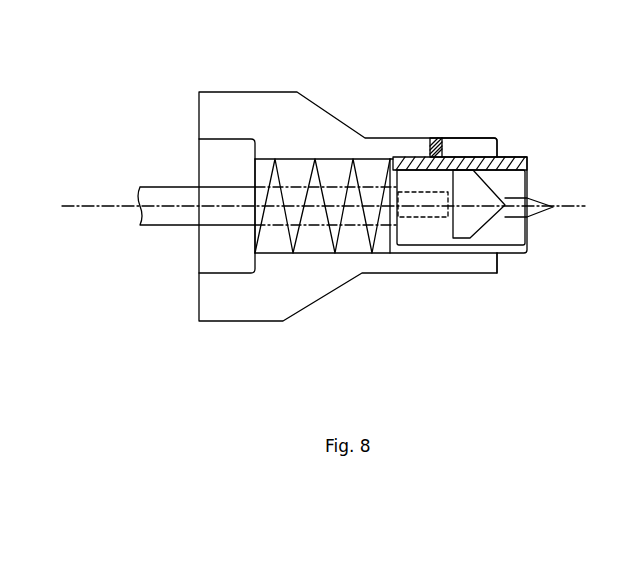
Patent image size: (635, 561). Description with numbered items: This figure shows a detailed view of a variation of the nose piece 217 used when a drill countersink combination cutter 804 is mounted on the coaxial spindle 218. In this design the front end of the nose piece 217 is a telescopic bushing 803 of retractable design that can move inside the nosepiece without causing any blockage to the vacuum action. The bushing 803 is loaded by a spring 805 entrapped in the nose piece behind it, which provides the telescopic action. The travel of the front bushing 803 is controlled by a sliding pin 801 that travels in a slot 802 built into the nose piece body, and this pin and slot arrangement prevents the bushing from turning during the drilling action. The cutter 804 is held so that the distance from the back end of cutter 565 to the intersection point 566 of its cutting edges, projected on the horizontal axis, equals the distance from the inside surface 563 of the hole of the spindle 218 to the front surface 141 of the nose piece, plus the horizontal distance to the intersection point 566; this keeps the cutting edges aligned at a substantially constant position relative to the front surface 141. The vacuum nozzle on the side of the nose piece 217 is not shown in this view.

The nose piece 217 is at (258, 82).
The inside surface of hole of spindle 563 is at (389, 164).
The sliding pin 801 is at (436, 130).
The slot 802 is at (465, 139).
The bushing 803 is at (525, 154).
The intersection point of the cutting edges 566 is at (511, 207).
The spring 805 is at (255, 185).
The coaxial spindle 218 is at (172, 236).
The back end of cutter 565 is at (394, 215).
The drill countersink combination cutter 804 is at (516, 221).
The front surface of the nose piece 141 is at (506, 267).